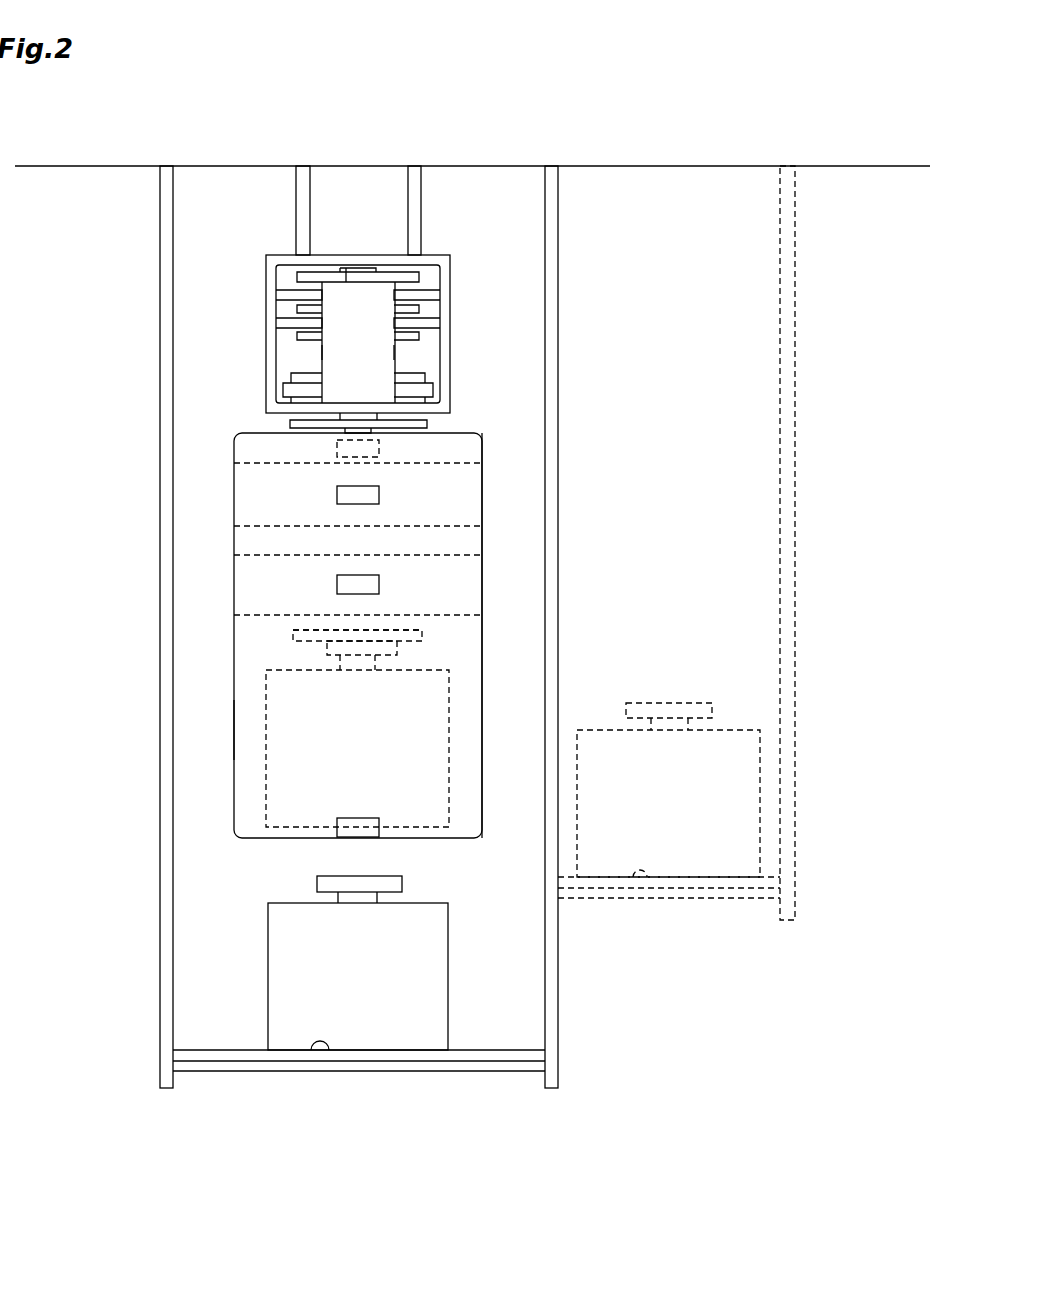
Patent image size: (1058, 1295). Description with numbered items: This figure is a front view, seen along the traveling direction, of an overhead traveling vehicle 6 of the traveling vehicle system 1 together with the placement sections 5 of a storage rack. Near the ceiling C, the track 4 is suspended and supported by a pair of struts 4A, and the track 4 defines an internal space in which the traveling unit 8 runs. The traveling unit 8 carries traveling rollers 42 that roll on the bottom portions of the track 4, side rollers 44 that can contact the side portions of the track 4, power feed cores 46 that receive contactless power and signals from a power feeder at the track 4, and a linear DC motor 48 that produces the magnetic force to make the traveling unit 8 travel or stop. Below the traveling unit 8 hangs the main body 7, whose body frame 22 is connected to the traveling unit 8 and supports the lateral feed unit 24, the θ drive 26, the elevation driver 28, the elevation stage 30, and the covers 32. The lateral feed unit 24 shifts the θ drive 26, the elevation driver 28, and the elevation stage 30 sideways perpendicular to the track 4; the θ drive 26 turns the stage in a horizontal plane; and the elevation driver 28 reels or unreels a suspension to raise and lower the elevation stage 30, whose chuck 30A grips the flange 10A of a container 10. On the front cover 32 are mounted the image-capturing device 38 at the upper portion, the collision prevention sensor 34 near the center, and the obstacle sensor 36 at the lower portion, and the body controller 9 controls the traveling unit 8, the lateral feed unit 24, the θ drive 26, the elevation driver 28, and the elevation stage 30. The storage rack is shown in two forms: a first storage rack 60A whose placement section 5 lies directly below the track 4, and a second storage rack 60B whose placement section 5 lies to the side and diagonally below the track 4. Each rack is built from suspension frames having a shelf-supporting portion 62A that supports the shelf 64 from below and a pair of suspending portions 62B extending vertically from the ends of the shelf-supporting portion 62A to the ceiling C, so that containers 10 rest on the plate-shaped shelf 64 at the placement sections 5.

The traveling vehicle system 1 is at (596, 122).
The ceiling C is at (682, 166).
The track 4 is at (450, 330).
The strut 4A is at (296, 207).
The placement section 5 is at (329, 1050).
The overhead traveling vehicle 6 is at (523, 420).
The main body 7 is at (495, 512).
The traveling unit 8 is at (312, 349).
The body controller 9 is at (337, 447).
The container 10 is at (470, 690).
The flange 10A is at (310, 640).
The body frame 22 is at (470, 445).
The lateral feed unit 24 is at (470, 480).
The θ drive 26 is at (470, 540).
The elevation driver 28 is at (470, 590).
The elevation stage 30 is at (470, 630).
The chuck 30A is at (470, 655).
The cover 32 is at (242, 725).
The collision prevention sensor 34 is at (337, 584).
The obstacle sensor 36 is at (350, 818).
The image-capturing device 38 is at (337, 493).
The traveling roller 42 is at (289, 400).
The side roller 44 is at (289, 391).
The power feed core 46 is at (297, 277).
The linear DC motor 48 is at (348, 268).
The first storage rack 60A is at (152, 900).
The second storage rack 60B is at (803, 628).
The shelf-supporting portion 62A is at (422, 1071).
The suspending portion 62B is at (160, 1005).
The shelf 64 is at (367, 1061).